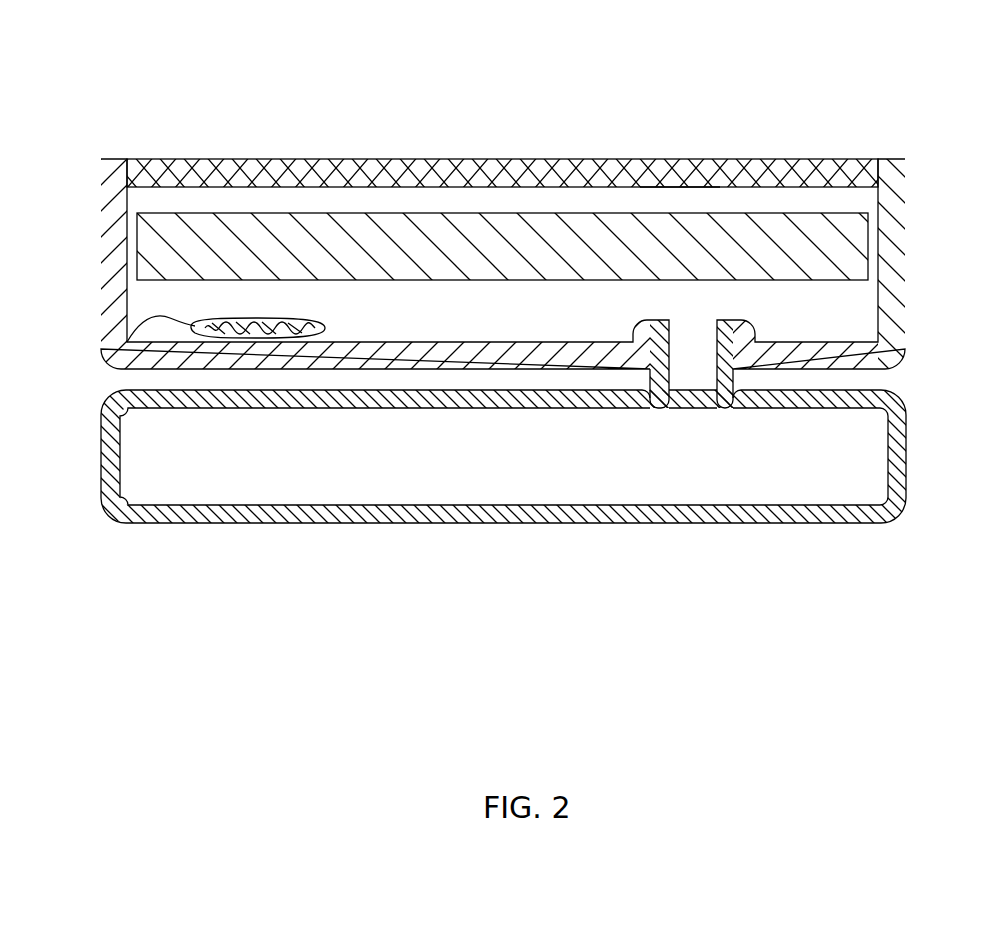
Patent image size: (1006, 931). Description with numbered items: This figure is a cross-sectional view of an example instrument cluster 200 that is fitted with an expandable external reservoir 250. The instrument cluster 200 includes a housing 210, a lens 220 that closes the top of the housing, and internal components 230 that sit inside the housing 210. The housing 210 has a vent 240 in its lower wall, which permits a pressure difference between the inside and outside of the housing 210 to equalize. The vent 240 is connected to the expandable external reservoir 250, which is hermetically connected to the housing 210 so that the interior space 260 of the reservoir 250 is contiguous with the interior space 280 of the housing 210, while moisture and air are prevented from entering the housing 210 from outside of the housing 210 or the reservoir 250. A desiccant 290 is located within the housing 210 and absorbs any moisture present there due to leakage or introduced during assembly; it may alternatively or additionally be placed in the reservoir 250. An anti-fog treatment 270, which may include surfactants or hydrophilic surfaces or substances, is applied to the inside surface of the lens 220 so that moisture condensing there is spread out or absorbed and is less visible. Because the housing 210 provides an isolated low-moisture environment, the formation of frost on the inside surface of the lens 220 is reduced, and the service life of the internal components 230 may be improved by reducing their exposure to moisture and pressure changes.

The instrument cluster 200 is at (197, 658).
The housing 210 is at (101, 222).
The lens 220 is at (782, 158).
The internal components 230 is at (173, 213).
The vent 240 is at (695, 328).
The expandable external reservoir 250 is at (436, 523).
The interior space of reservoir 260 is at (523, 457).
The anti-fog treatment 270 is at (679, 188).
The interior space of housing 280 is at (523, 321).
The desiccant 290 is at (101, 341).